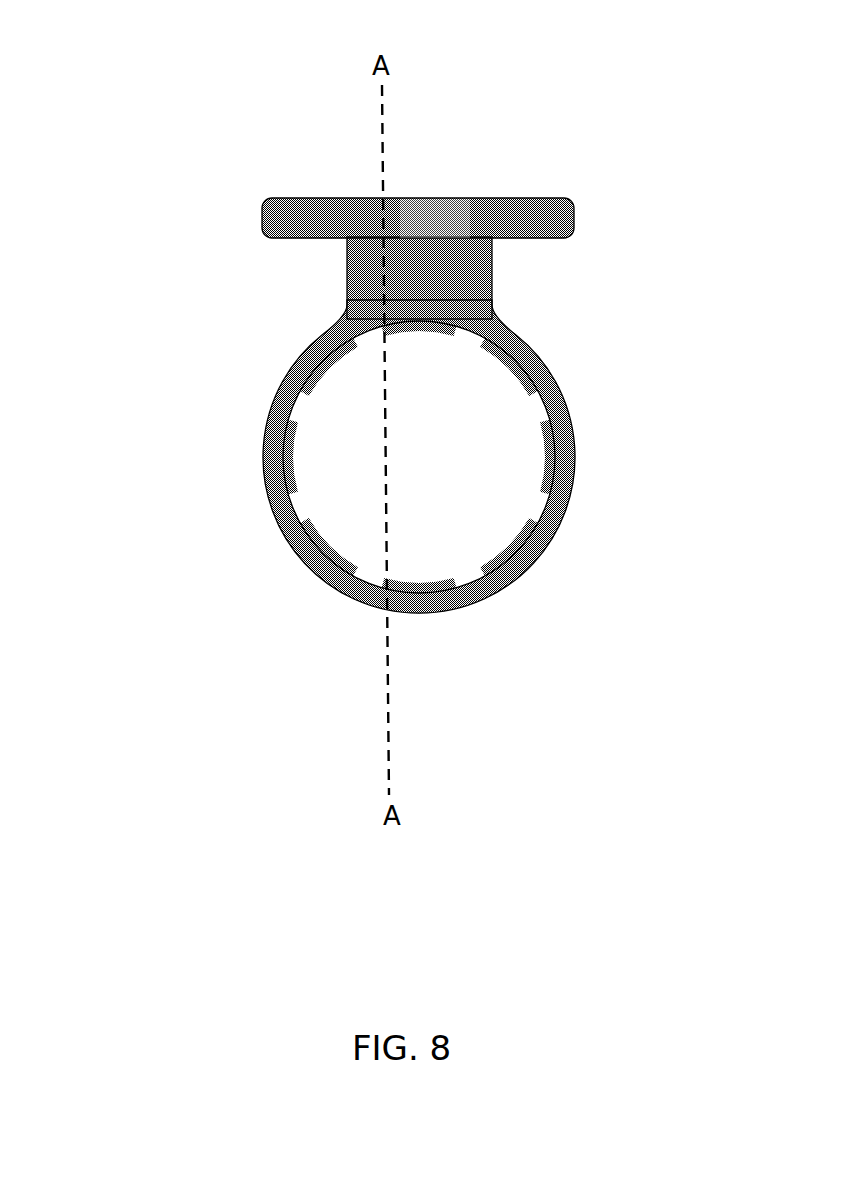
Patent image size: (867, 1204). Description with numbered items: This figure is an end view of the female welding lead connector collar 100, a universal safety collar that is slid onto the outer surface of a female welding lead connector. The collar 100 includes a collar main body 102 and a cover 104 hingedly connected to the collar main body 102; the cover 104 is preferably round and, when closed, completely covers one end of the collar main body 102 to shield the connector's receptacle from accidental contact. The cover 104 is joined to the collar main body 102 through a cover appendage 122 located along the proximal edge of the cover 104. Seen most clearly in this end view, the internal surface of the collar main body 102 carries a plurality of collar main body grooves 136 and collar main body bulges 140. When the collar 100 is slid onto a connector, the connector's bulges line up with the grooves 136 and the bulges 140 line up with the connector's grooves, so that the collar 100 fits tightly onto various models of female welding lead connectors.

The female welding lead connector collar 100 is at (220, 105).
The collar main body 102 is at (320, 342).
The cover 104 is at (523, 208).
The cover appendage 122 is at (417, 220).
The collar main body grooves 136 is at (307, 387).
The collar main body bulges 140 is at (543, 460).